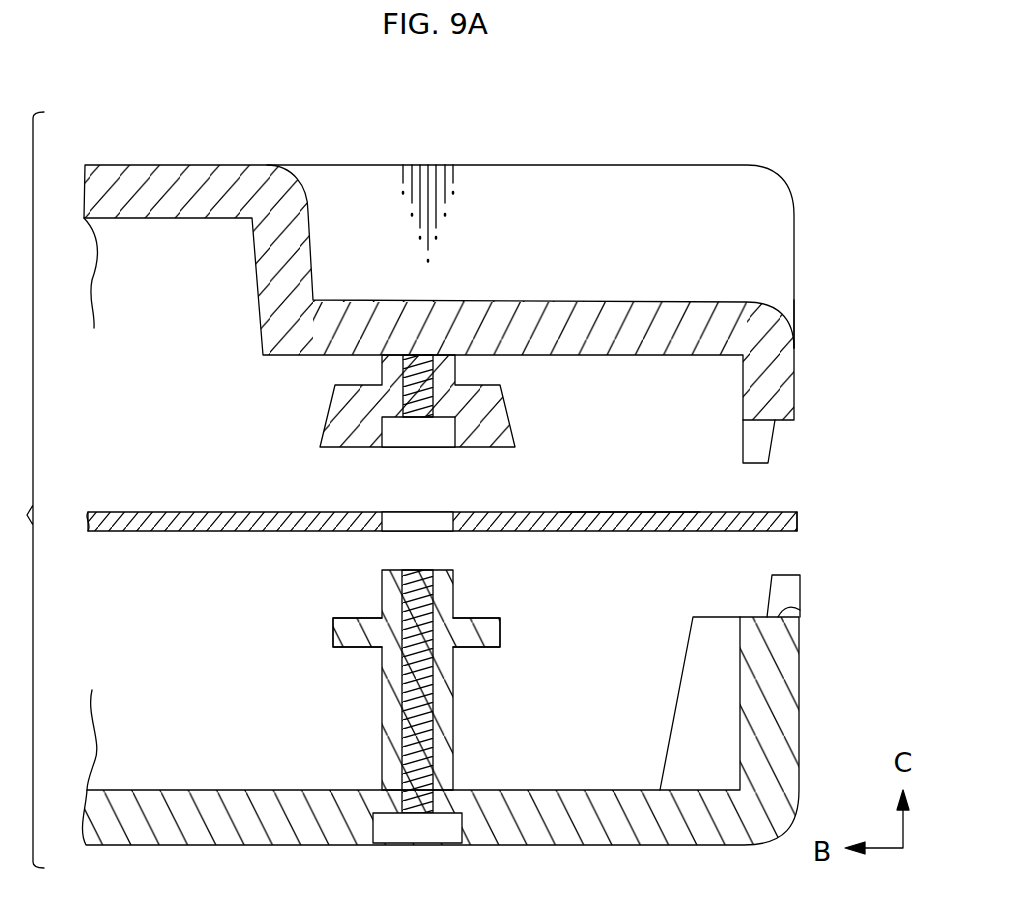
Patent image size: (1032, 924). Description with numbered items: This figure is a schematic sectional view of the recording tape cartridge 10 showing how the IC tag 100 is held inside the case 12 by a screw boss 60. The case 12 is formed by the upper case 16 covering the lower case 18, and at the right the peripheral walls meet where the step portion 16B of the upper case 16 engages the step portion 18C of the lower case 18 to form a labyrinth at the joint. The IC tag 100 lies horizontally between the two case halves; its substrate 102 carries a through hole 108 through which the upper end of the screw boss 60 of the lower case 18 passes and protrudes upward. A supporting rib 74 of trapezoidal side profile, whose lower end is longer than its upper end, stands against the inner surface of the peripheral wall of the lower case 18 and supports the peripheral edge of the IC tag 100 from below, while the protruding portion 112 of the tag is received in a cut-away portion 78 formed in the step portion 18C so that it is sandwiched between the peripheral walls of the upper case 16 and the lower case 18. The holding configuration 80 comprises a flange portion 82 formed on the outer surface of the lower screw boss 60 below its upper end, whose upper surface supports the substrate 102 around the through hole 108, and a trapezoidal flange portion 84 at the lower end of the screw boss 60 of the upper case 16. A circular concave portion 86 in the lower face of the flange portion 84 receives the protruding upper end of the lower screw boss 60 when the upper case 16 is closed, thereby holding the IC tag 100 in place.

The recording tape cartridge 10 is at (797, 156).
The case 12 is at (812, 342).
The upper case 16 is at (228, 160).
The step portion 16B is at (757, 448).
The lower case 18 is at (196, 864).
The step portion 18C is at (786, 592).
The screw boss 60 is at (382, 379).
The supporting rib 74 is at (690, 707).
The cut-away portion 78 is at (797, 606).
The holding configuration 80 is at (292, 440).
The flange portion 82 is at (505, 634).
The flange portion 84 is at (495, 412).
The concave portion 86 is at (386, 442).
The IC tag 100 is at (157, 492).
The substrate 102 is at (610, 512).
The through hole 108 is at (441, 511).
The protruding portion 112 is at (795, 521).